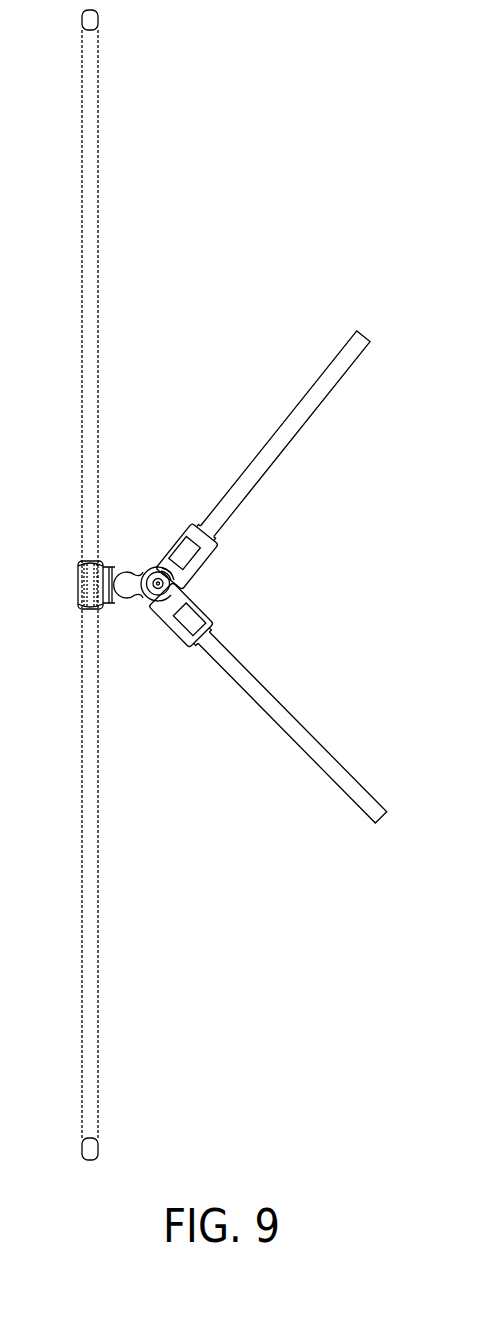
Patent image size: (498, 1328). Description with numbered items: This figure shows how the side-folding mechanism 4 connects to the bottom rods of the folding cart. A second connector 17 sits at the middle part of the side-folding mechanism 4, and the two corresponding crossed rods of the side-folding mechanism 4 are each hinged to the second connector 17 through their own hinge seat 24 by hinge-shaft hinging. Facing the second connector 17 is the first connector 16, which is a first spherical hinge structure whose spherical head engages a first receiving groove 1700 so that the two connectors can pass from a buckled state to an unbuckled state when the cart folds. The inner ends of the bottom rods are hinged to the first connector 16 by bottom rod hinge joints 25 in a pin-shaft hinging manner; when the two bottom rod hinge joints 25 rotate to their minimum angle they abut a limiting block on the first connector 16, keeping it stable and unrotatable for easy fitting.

The side-folding mechanism 4 is at (88, 756).
The hinge seat of the side-folding mechanism 24 is at (50, 568).
The second connector 17 is at (102, 605).
The first connector 16 is at (123, 582).
The first receiving groove 1700 is at (138, 603).
The bottom rod hinge joint 25 is at (197, 612).